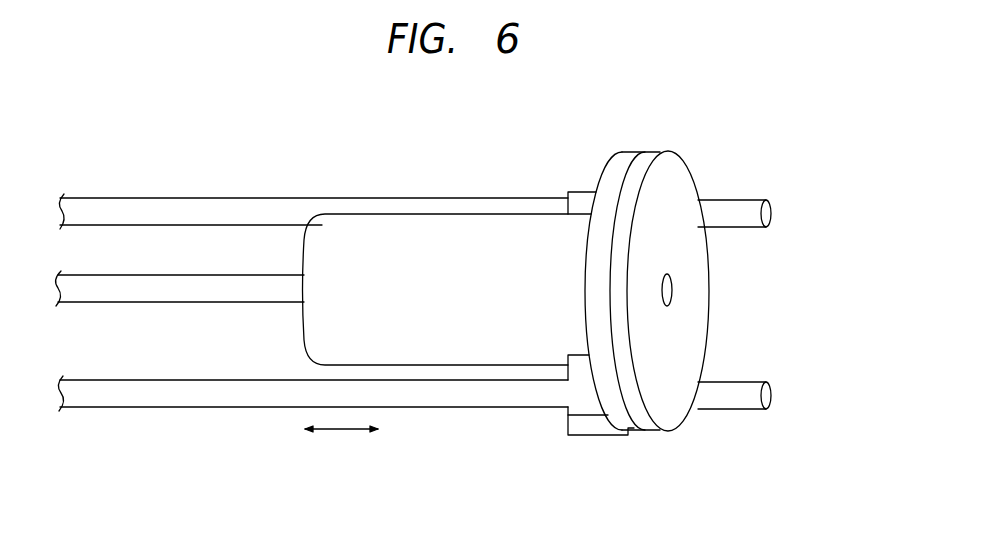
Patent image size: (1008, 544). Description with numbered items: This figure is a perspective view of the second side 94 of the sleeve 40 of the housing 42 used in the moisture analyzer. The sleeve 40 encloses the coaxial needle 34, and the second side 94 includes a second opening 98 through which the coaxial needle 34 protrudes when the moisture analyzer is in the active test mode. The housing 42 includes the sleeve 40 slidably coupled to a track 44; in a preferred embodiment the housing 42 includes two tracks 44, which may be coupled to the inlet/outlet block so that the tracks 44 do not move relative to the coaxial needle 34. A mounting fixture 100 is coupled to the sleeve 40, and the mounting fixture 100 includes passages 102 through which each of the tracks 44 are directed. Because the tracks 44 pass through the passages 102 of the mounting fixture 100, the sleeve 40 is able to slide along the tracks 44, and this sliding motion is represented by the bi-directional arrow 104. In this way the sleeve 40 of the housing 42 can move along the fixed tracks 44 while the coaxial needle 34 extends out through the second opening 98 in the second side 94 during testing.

The coaxial needle 34 is at (100, 287).
The sleeve 40 is at (387, 233).
The housing 42 is at (841, 323).
The track 44 is at (120, 197).
The second side 94 is at (690, 263).
The second opening 98 is at (669, 290).
The mounting fixture 100 is at (597, 425).
The passages 102 is at (553, 188).
The bi-directional arrow 104 is at (345, 430).